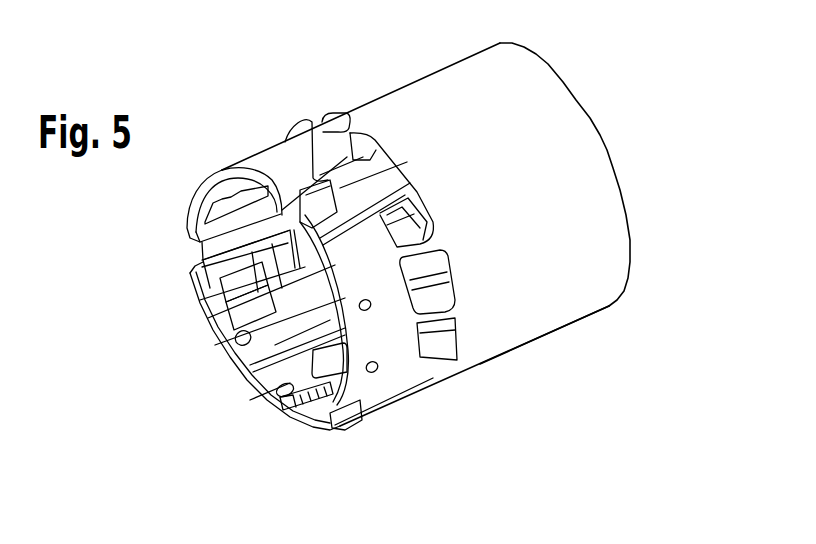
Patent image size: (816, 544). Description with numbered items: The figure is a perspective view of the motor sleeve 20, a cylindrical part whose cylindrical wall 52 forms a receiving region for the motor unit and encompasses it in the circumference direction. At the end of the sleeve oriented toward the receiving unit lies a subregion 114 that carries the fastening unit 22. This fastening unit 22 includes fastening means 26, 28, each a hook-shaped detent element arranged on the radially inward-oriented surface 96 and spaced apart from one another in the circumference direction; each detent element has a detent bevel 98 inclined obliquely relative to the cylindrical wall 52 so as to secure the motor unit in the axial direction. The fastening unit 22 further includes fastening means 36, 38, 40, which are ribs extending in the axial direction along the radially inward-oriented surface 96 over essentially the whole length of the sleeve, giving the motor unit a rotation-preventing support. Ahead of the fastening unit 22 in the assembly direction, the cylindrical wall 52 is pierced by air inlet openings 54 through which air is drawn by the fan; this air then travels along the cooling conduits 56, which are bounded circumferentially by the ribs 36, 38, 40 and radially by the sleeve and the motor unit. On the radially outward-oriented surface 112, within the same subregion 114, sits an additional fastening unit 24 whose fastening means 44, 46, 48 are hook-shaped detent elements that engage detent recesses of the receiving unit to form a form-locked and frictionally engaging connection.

The motor sleeve 20 is at (587, 152).
The fastening unit 22 is at (258, 395).
The additional fastening unit 24 is at (342, 152).
The fastening means 26 is at (220, 351).
The fastening means 28 is at (296, 412).
The fastening means 36 is at (318, 412).
The fastening means 38 is at (238, 377).
The fastening means 40 is at (222, 266).
The fastening means 44 is at (330, 190).
The fastening means 46 is at (343, 418).
The fastening means 48 is at (205, 253).
The cylindrical wall 52 is at (556, 317).
The air inlet openings 54 is at (427, 285).
The cooling conduits 56 is at (258, 363).
The radially inward-oriented surface 96 is at (208, 302).
The detent bevel 98 is at (213, 332).
The radially outward-oriented surface 112 is at (277, 160).
The subregion 114 is at (250, 163).